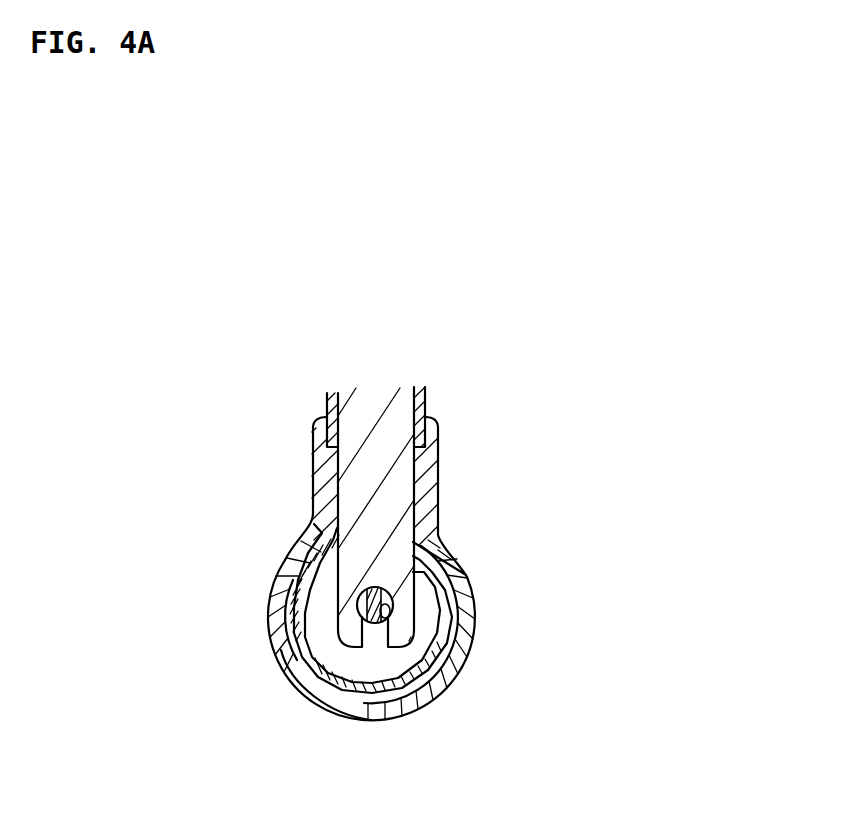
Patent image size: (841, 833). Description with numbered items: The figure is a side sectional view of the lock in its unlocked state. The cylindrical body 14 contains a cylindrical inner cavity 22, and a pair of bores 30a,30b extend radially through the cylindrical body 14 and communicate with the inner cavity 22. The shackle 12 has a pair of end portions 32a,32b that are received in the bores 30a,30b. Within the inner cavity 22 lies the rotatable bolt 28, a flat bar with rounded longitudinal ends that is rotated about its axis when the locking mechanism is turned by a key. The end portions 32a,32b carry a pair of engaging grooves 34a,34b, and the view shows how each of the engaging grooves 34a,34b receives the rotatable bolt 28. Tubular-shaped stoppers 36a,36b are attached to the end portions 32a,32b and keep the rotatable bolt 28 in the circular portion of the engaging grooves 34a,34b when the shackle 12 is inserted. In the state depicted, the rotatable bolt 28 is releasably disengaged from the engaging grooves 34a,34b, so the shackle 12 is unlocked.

The shackle 12 is at (373, 398).
The cylindrical body 14 is at (476, 632).
The inner cavity 22 is at (284, 647).
The rotatable bolt 28 is at (372, 626).
The bores 30a,30b is at (338, 526).
The end portions 32a,32b is at (417, 592).
The engaging grooves 34a,34b is at (383, 623).
The stoppers 36a,36b is at (439, 463).